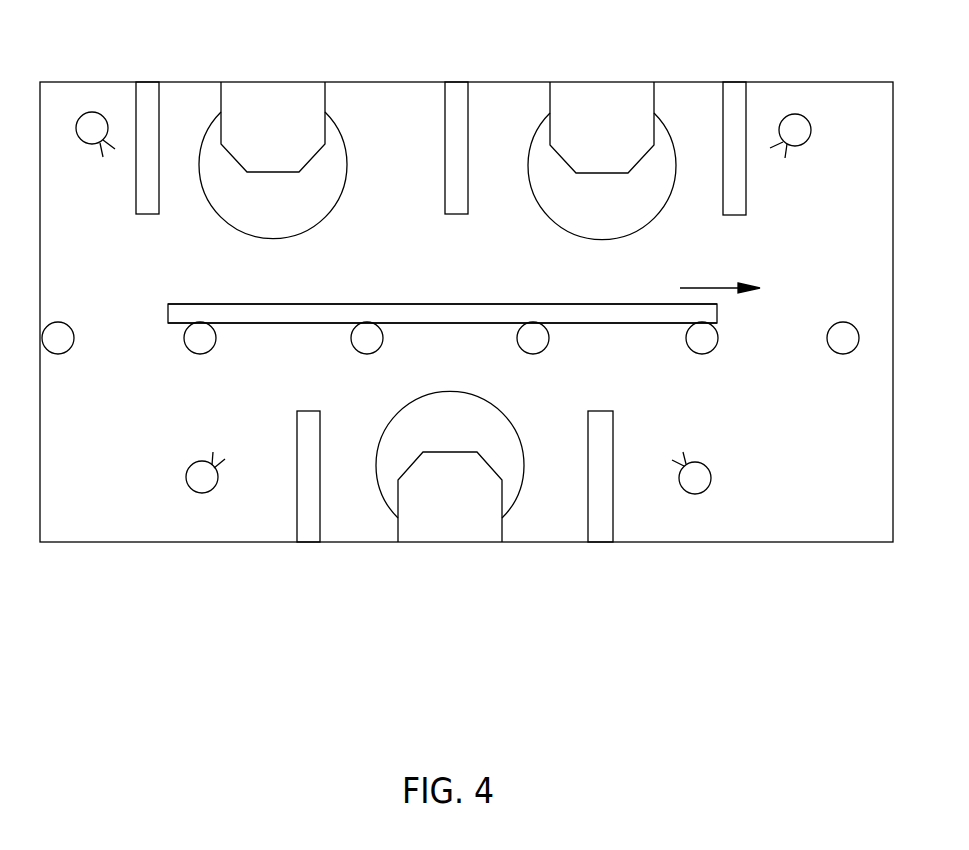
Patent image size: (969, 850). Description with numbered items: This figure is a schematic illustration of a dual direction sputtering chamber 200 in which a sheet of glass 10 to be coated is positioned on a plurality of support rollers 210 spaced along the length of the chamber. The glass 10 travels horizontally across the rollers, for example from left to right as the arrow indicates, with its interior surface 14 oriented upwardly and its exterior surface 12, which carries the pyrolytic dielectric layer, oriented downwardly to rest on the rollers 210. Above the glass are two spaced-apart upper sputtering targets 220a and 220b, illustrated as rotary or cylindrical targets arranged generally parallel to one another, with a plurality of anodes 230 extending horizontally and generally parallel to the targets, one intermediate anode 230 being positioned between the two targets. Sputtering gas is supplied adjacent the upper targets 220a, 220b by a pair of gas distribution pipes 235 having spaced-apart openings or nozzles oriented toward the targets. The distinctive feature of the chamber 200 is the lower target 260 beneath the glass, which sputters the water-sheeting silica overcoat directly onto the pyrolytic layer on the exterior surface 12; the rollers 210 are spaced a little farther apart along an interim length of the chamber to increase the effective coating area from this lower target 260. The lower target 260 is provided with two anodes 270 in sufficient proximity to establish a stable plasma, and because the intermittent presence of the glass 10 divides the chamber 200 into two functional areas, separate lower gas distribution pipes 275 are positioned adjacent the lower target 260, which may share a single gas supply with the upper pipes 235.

The sputtering chamber 200 is at (848, 82).
The sheet of glass 10 is at (430, 316).
The exterior surface 12 is at (623, 325).
The interior surface 14 is at (585, 308).
The support rollers 210 is at (66, 352).
The upper sputtering target 220a is at (214, 120).
The upper sputtering target 220b is at (542, 127).
The anodes 230 is at (136, 100).
The gas distribution pipes 235 is at (102, 113).
The lower target 260 is at (437, 432).
The anodes 270 is at (307, 460).
The lower gas distribution pipes 275 is at (210, 490).